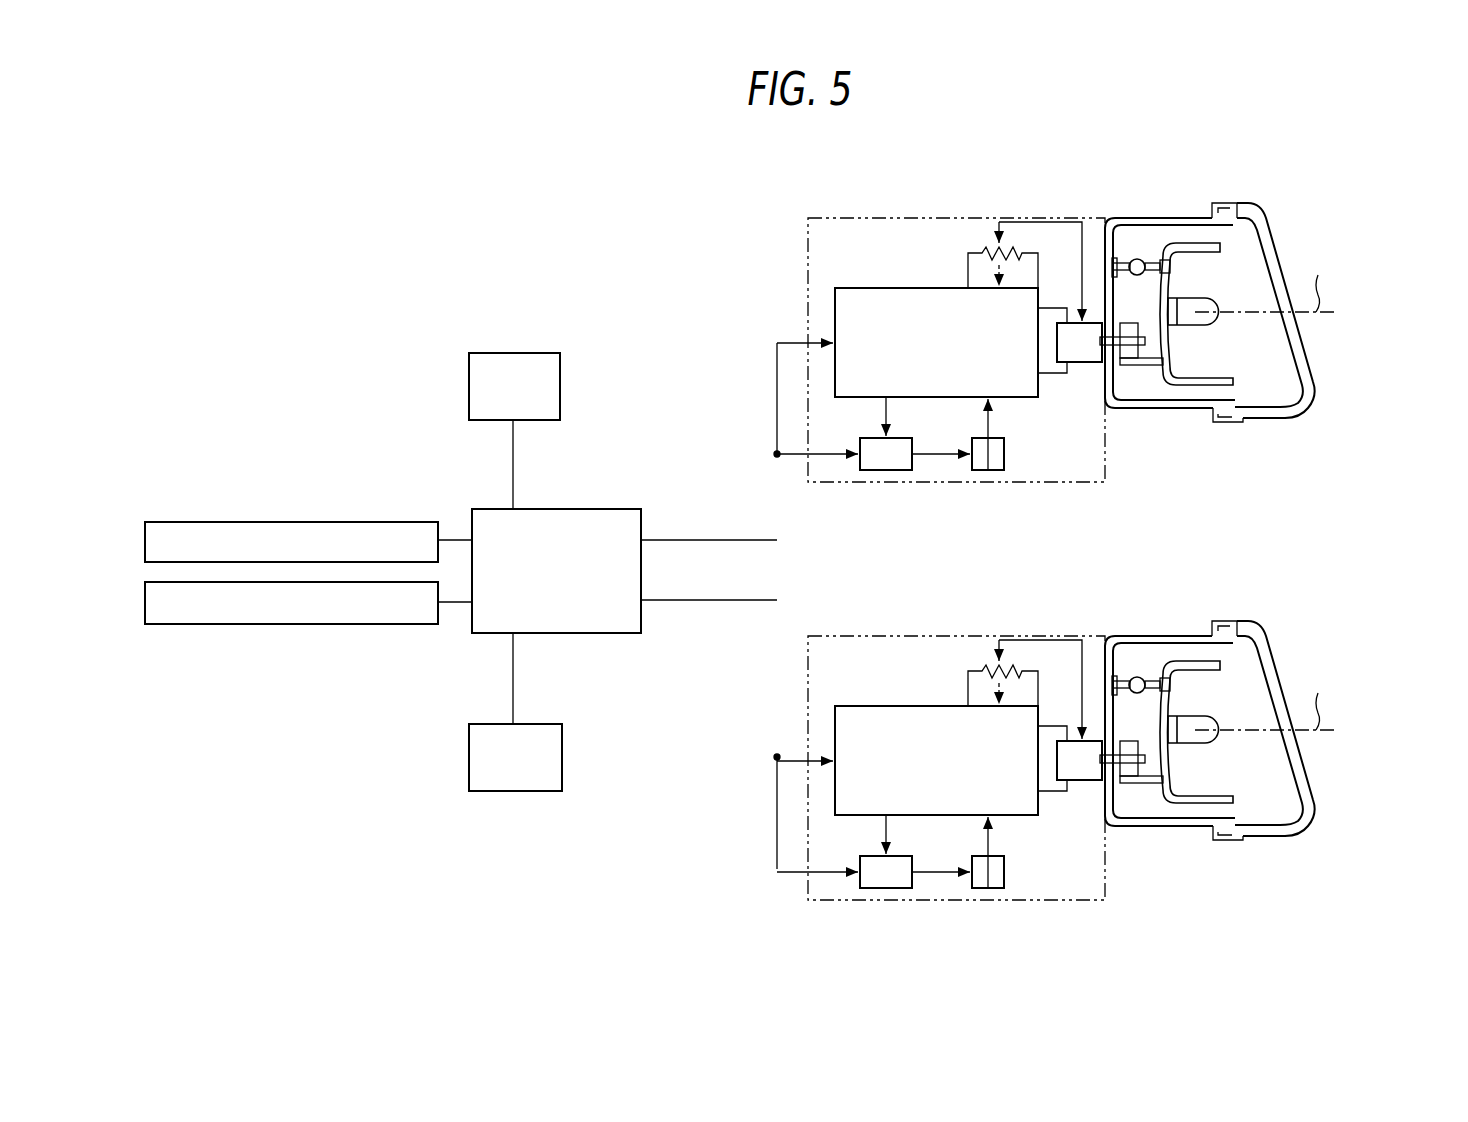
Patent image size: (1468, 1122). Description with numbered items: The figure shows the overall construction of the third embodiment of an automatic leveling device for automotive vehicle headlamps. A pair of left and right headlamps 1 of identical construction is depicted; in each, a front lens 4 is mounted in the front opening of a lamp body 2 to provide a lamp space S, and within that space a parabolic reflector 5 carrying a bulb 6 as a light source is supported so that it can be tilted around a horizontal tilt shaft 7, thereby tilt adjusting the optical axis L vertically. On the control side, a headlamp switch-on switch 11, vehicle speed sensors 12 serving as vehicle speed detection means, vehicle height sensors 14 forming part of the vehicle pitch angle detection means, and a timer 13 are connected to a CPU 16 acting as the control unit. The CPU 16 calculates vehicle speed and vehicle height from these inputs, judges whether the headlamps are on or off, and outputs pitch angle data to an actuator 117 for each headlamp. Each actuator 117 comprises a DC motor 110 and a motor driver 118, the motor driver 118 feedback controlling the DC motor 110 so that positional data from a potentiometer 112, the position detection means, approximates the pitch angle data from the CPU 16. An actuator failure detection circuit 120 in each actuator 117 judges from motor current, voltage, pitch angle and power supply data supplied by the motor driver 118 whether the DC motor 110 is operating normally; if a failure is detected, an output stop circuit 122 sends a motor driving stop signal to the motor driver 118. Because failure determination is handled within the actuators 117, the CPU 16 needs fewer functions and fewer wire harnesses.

The headlamp 1 is at (1346, 216).
The lamp body 2 is at (1122, 215).
The front lens 4 is at (1277, 257).
The parabolic reflector 5 is at (1190, 245).
The bulb 6 is at (1202, 300).
The horizontal tilt shaft 7 is at (1132, 260).
The headlamp switch-on switch 11 is at (469, 387).
The vehicle speed sensor 12 is at (289, 522).
The timer 13 is at (469, 758).
The vehicle height sensor 14 is at (288, 624).
The CPU 16 is at (597, 509).
The DC motor 110 is at (1085, 366).
The potentiometer 112 is at (984, 242).
The actuator 117 is at (1106, 463).
The motor driver 118 is at (885, 288).
The actuator failure detection circuit 120 is at (886, 471).
The output stop circuit 122 is at (988, 471).